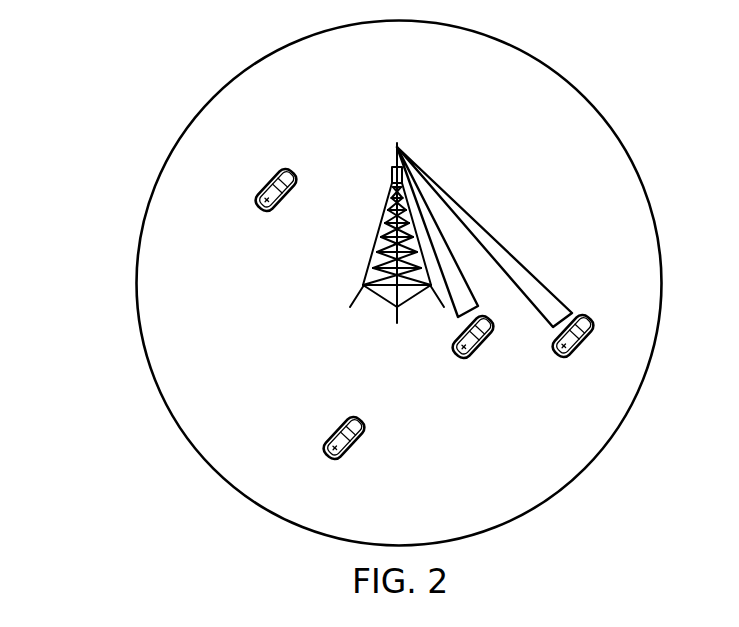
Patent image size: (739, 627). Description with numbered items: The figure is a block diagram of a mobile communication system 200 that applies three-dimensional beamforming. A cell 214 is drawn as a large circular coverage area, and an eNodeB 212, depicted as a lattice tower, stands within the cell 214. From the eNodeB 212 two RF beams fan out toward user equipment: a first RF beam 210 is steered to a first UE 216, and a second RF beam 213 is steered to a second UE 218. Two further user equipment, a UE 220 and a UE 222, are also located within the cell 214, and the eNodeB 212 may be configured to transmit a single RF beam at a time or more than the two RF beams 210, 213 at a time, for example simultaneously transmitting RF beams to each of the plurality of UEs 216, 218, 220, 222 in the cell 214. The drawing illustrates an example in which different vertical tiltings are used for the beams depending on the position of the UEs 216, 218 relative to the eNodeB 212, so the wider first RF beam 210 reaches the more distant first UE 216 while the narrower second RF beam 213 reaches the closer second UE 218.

The mobile communication system 200 is at (147, 65).
The first RF beam 210 is at (457, 202).
The eNodeB 212 is at (385, 203).
The second RF beam 213 is at (453, 256).
The cell 214 is at (564, 77).
The first UE 216 is at (597, 318).
The second UE 218 is at (477, 357).
The UE 220 is at (353, 412).
The UE 222 is at (254, 211).